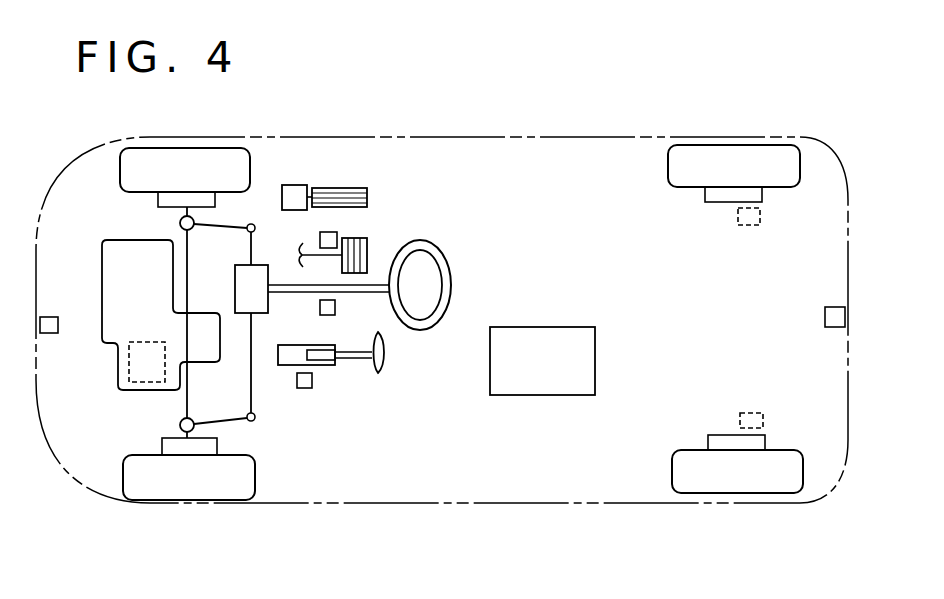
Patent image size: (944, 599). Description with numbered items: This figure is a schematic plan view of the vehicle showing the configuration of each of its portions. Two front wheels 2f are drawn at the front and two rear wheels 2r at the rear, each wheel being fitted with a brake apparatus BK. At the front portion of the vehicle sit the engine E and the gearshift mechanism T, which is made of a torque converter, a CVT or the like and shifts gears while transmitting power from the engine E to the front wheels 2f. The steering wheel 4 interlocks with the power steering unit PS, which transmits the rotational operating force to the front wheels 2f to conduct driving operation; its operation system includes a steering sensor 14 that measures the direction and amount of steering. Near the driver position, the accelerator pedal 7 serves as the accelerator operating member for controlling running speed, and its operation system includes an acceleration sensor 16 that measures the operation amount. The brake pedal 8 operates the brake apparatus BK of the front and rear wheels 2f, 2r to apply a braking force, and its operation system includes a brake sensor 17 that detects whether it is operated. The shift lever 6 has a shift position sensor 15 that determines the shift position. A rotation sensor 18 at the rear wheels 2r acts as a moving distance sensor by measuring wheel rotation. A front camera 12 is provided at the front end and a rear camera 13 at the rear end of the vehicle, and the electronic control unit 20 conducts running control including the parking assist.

The front wheels 2f is at (188, 148).
The rear wheels 2r is at (732, 145).
The steering wheel 4 is at (449, 274).
The shift lever 6 is at (388, 353).
The accelerator pedal 7 is at (353, 187).
The brake pedal 8 is at (367, 250).
The front camera 12 is at (48, 317).
The rear camera 13 is at (825, 318).
The steering sensor 14 is at (325, 317).
The shift position sensor 15 is at (313, 380).
The acceleration sensor 16 is at (295, 185).
The brake sensor 17 is at (320, 240).
The rotation sensor 18 is at (750, 225).
The electronic control unit 20 is at (542, 327).
The brake apparatus BK is at (158, 198).
The power steering unit PS is at (234, 300).
The gearshift mechanism T is at (129, 363).
The engine E is at (152, 392).